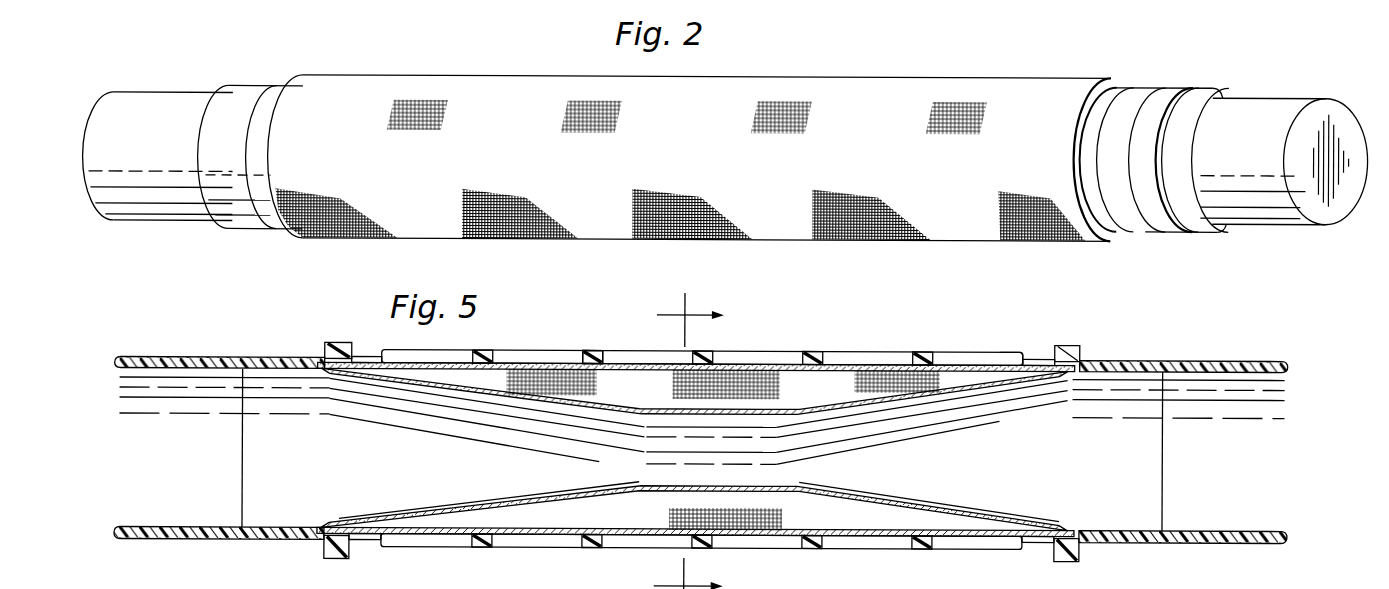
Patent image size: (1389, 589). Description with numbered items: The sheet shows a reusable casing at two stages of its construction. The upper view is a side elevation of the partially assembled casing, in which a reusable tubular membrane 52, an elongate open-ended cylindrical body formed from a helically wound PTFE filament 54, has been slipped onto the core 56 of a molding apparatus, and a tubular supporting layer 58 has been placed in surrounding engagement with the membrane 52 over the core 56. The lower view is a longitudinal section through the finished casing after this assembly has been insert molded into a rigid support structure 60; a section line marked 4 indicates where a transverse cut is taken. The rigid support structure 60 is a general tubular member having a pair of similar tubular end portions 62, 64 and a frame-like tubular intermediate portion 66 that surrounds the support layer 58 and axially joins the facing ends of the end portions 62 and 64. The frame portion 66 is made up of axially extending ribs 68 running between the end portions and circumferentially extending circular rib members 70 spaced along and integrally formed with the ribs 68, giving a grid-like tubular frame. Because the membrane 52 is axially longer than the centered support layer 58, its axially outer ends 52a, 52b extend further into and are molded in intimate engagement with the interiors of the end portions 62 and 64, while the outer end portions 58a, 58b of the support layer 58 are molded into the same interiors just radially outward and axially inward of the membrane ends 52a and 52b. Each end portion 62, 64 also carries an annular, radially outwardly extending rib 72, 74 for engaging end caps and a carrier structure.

In FIG. 2, the tubular membrane 52 is at (1168, 82).
In FIG. 5, the tubular membrane 52 is at (907, 500).
In FIG. 5, the axially outer end of the tubular membrane 52a is at (1130, 528).
In FIG. 5, the axially outer end of the tubular membrane 52b is at (275, 527).
In FIG. 2, the filament 54 is at (272, 98).
In FIG. 2, the core 56 is at (1340, 123).
In FIG. 2, the tubular supporting layer 58 is at (1035, 77).
In FIG. 5, the tubular supporting layer 58 is at (523, 538).
In FIG. 5, the axially outer end portion of the tubular support layer 58a is at (1075, 547).
In FIG. 5, the axially outer end portion of the tubular support layer 58b is at (323, 546).
In FIG. 5, the rigid support structure 60 is at (1022, 346).
In FIG. 5, the tubular end portion 62 is at (1215, 358).
In FIG. 5, the tubular end portion 64 is at (186, 356).
In FIG. 5, the frame-like tubular intermediate portion 66 is at (823, 345).
In FIG. 5, the axially extending ribs 68 is at (726, 420).
In FIG. 5, the circumferentially extending rib members 70 is at (595, 350).
In FIG. 5, the annular radially outwardly extending rib 72 is at (1076, 346).
In FIG. 5, the annular radially outwardly extending rib 74 is at (340, 343).
In FIG. 5, the section line 4- 4 is at (689, 441).